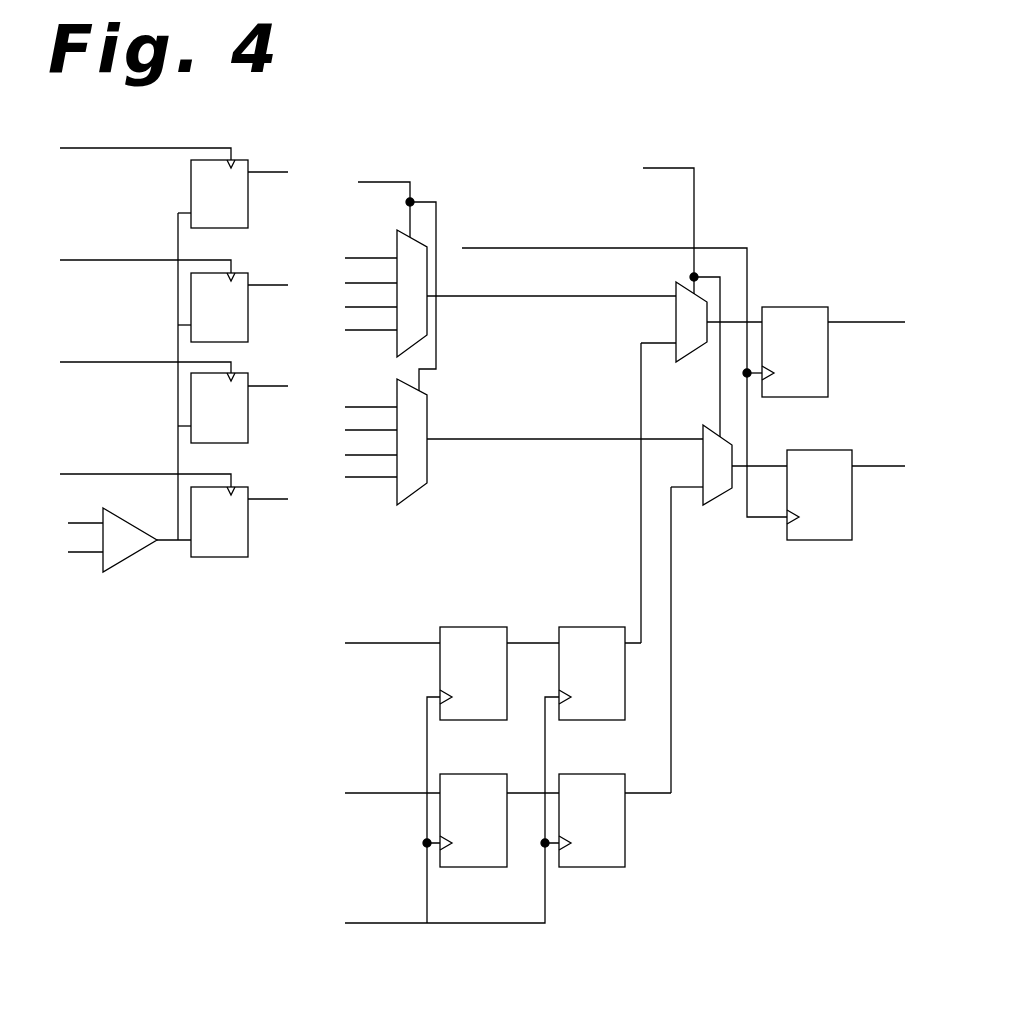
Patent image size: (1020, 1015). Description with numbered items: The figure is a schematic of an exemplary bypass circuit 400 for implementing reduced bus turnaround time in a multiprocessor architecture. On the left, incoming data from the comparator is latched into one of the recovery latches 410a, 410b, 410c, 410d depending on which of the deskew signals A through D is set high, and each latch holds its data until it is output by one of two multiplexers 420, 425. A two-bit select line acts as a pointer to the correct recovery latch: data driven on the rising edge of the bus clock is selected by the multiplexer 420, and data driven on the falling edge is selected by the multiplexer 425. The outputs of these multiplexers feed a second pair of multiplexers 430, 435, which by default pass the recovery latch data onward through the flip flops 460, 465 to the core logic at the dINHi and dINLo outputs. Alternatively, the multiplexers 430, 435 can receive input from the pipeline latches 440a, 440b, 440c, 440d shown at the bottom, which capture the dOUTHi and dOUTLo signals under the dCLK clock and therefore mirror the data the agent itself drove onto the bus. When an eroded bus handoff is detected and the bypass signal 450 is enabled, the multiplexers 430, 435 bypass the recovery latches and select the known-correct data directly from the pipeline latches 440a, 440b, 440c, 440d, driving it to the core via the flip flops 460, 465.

The bypass circuit 400 is at (474, 513).
The recovery latch 410a is at (174, 179).
The recovery latch 410b is at (174, 292).
The recovery latch 410c is at (174, 393).
The recovery latch 410d is at (174, 506).
The multiplexer 420 is at (396, 241).
The multiplexer 425 is at (396, 389).
The multiplexer 430 is at (676, 312).
The multiplexer 435 is at (727, 493).
The pipeline latch 440a is at (422, 673).
The pipeline latch 440b is at (422, 820).
The pipeline latch 440c is at (574, 673).
The pipeline latch 440d is at (589, 820).
The bypass signal 450 is at (643, 169).
The flip flop 460 is at (833, 350).
The flip flop 465 is at (846, 494).